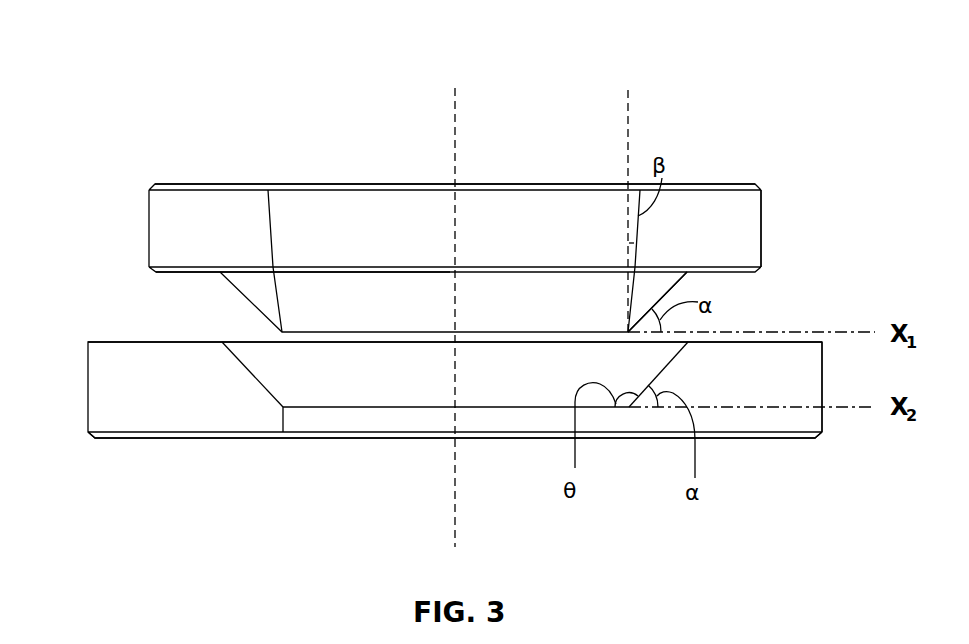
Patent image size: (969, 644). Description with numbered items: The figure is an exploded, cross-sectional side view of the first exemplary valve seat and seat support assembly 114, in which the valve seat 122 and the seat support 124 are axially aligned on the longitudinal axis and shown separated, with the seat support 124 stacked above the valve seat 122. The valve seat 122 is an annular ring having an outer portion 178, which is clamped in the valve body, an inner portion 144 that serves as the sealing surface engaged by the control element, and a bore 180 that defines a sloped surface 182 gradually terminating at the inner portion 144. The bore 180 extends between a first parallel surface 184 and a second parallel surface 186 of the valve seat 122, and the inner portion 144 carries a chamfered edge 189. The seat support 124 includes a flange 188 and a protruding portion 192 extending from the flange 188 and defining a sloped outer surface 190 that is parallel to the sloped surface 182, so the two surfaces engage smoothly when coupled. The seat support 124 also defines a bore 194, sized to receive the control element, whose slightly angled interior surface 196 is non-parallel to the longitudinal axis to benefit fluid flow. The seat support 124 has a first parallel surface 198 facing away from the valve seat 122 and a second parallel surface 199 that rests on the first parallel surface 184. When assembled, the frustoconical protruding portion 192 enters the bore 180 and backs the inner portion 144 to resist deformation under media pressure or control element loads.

The valve seat and seat support assembly 114 is at (168, 57).
The valve seat 122 is at (88, 386).
The seat support 124 is at (157, 230).
The inner portion 144 is at (372, 426).
The outer portion 178 is at (822, 380).
The bore 180 is at (250, 375).
The sloped surface 182 is at (688, 343).
The first parallel surface 184 is at (98, 341).
The second parallel surface 186 is at (110, 440).
The flange 188 is at (748, 216).
The chamfered edge 189 is at (532, 437).
The sloped outer surface 190 is at (675, 290).
The protruding portion 192 is at (257, 292).
The bore 194 is at (270, 212).
The angled interior surface 196 is at (635, 213).
The first parallel surface 198 is at (180, 188).
The second parallel surface 199 is at (187, 275).